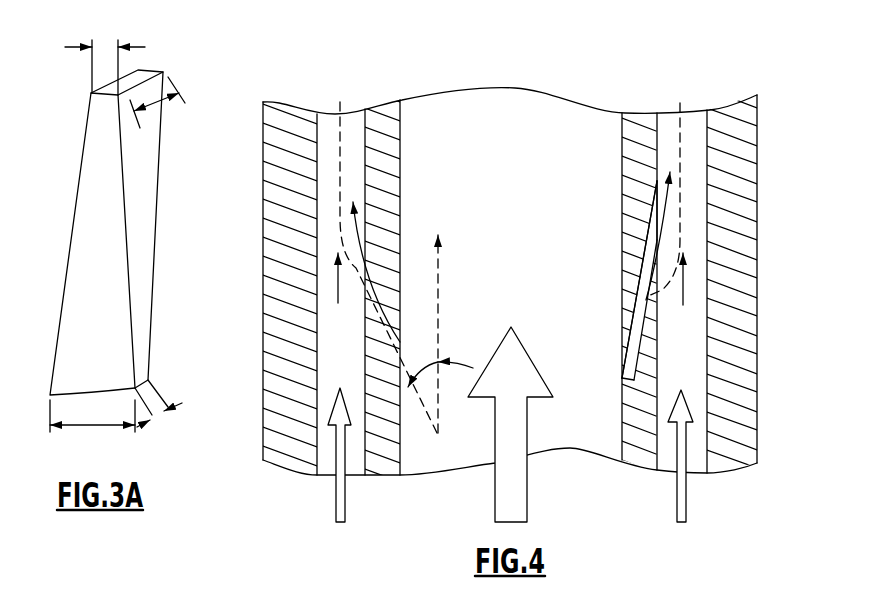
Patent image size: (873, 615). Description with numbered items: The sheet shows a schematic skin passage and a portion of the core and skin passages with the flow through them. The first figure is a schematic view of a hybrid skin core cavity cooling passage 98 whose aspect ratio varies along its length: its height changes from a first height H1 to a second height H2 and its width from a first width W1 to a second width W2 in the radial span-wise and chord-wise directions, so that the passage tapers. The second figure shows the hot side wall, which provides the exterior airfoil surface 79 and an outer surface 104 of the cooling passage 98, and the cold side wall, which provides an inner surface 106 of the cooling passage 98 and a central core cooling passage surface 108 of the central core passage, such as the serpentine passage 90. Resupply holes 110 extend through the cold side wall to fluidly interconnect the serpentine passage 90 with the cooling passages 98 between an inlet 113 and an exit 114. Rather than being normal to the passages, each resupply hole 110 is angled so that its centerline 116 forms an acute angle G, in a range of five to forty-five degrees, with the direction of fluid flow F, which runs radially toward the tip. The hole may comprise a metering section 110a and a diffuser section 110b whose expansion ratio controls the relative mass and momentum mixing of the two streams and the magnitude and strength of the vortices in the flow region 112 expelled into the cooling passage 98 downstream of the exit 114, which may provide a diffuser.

In FIG. 4, the exterior airfoil surface 79 is at (263, 298).
In FIG. 4, the serpentine passage 90 is at (556, 179).
In FIG. 3A, the hybrid skin core cavity cooling passage 98 is at (72, 183).
In FIG. 4, the hybrid skin core cavity cooling passage 98 is at (355, 462).
In FIG. 4, the outer surface 104 is at (318, 131).
In FIG. 4, the inner surface 106 is at (358, 123).
In FIG. 4, the central core cooling passage surface 108 is at (402, 132).
In FIG. 4, the resupply hole 110 is at (380, 335).
In FIG. 4, the metering section 110a is at (637, 282).
In FIG. 4, the diffuser section 110b is at (647, 248).
In FIG. 4, the flow region 112 is at (668, 140).
In FIG. 4, the inlet 113 is at (621, 373).
In FIG. 4, the exit 114 is at (658, 195).
In FIG. 4, the centerline 116 is at (377, 300).
In FIG. 4, the direction of fluid flow F is at (440, 288).
In FIG. 4, the acute angle G is at (415, 385).
In FIG. 3A, the first height H1 is at (90, 430).
In FIG. 3A, the second height H2 is at (103, 45).
In FIG. 3A, the first width W1 is at (163, 408).
In FIG. 3A, the second width W2 is at (153, 103).